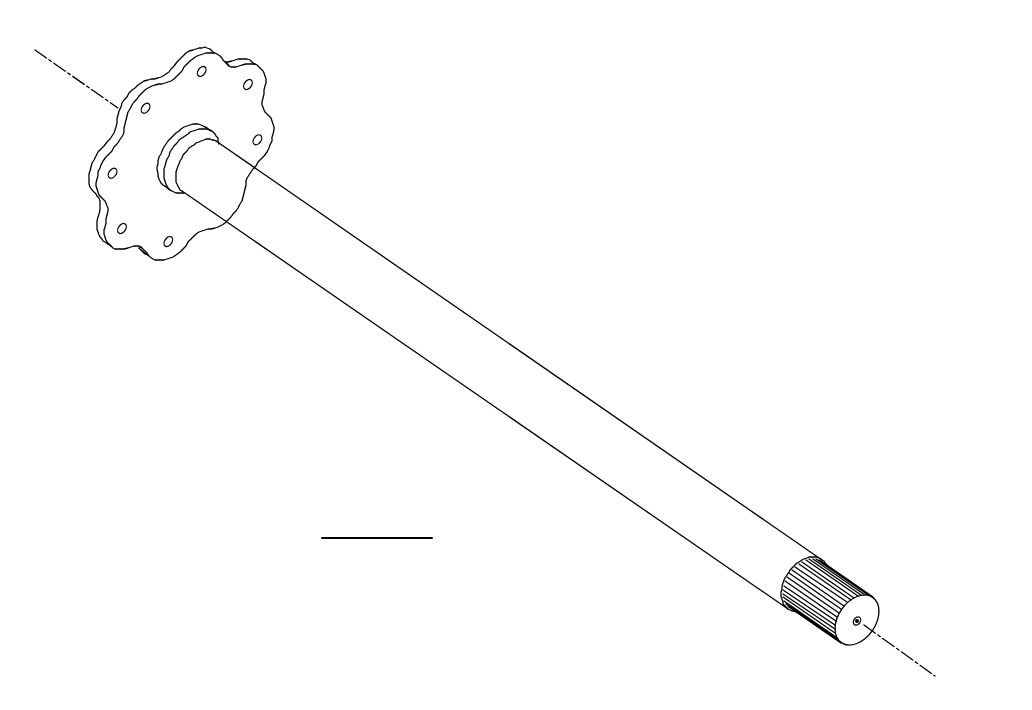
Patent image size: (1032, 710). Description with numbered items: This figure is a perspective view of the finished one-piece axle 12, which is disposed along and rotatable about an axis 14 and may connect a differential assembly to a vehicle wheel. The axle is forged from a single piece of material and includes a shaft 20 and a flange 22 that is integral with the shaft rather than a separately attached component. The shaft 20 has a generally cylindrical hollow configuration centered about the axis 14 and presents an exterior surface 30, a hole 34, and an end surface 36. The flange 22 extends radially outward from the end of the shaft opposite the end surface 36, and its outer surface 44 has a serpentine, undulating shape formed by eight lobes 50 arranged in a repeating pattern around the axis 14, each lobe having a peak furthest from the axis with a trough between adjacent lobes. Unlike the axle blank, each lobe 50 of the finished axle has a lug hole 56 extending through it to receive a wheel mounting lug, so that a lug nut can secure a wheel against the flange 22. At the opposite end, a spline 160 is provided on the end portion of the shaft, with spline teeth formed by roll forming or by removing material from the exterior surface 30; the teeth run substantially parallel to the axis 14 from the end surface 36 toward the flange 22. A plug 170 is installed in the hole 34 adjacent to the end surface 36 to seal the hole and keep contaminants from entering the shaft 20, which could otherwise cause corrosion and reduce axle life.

The one-piece axle 12 is at (624, 232).
The axis 14 is at (84, 72).
The shaft 20 is at (505, 376).
The flange 22 is at (181, 166).
The exterior surface 30 is at (473, 316).
The hole 34 is at (867, 592).
The end surface 36 is at (847, 637).
The outer surface 44 is at (185, 57).
The lobes 50 is at (128, 91).
The lug hole 56 is at (152, 108).
The spline 160 is at (807, 620).
The plug 170 is at (864, 619).